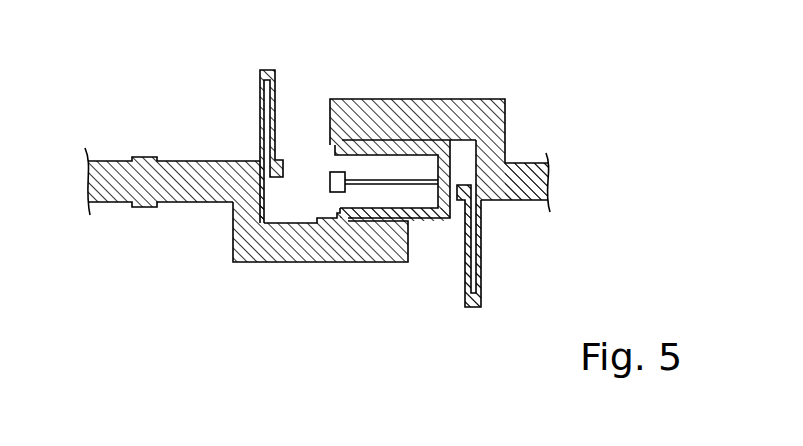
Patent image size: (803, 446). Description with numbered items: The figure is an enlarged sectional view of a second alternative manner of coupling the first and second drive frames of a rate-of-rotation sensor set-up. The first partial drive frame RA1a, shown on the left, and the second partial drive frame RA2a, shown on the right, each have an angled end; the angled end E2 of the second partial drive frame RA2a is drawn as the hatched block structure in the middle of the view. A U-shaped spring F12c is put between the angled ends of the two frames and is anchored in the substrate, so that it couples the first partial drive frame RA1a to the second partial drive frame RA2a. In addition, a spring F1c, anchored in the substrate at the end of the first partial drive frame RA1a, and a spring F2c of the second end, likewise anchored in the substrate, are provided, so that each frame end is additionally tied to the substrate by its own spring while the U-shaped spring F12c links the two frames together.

The first partial drive frame RA1a is at (149, 181).
The second partial drive frame RA2a is at (527, 174).
The angled end E2 is at (402, 117).
The spring F1c is at (266, 70).
The spring F2c is at (481, 269).
The U-shaped spring F12c is at (436, 211).